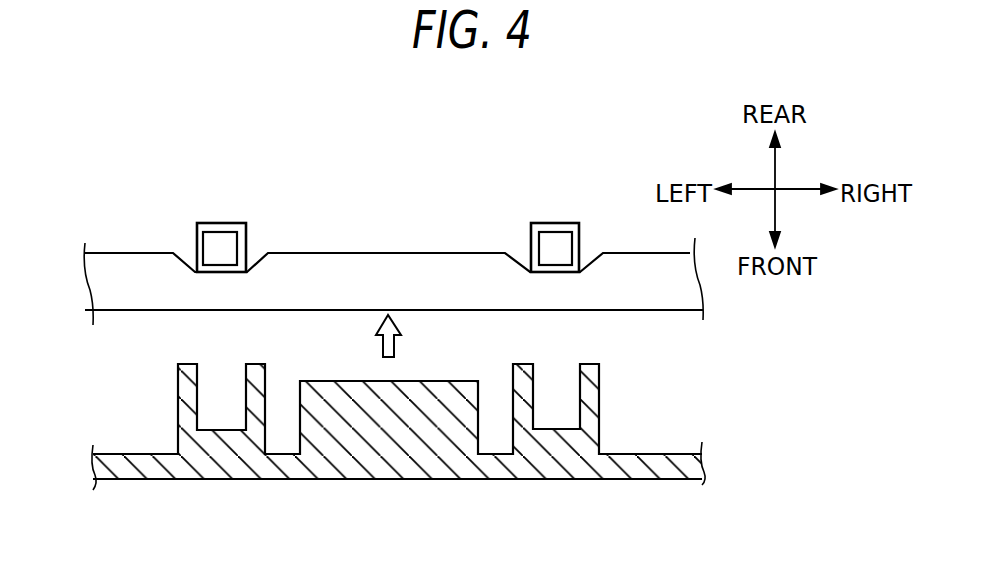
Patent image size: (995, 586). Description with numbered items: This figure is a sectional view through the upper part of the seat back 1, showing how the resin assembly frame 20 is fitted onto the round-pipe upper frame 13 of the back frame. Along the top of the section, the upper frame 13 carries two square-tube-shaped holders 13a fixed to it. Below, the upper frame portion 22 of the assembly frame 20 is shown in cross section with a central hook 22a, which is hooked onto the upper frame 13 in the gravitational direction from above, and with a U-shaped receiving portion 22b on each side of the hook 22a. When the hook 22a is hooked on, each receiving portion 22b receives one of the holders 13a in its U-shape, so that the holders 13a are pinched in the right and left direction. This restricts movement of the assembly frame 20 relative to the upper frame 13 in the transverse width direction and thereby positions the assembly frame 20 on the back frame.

The seat back 1 is at (108, 181).
The upper frame 13 is at (386, 265).
The holder 13a is at (220, 225).
The assembly frame 20 is at (652, 448).
The upper frame portion 22 is at (295, 468).
The hook 22a is at (435, 383).
The receiving portion 22b is at (253, 370).